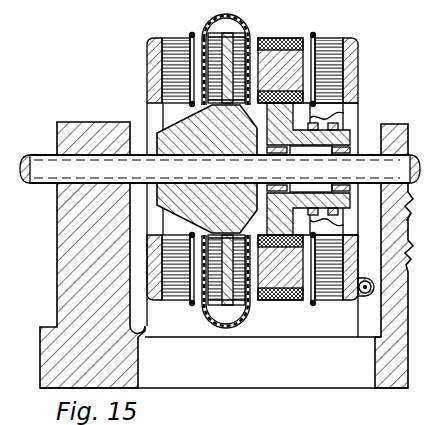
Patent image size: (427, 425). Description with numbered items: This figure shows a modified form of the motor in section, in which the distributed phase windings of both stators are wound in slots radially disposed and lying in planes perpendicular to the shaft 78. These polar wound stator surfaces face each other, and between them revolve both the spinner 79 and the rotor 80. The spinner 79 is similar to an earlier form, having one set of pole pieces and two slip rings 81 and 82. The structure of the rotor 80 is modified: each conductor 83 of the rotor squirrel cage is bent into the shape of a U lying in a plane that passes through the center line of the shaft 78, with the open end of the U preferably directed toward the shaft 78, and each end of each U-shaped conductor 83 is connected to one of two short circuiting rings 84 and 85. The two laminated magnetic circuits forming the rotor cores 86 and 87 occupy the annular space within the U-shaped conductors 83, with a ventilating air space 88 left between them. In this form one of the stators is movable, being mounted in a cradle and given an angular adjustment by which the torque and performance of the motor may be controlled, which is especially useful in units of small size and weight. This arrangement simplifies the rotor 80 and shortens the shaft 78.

The shaft 78 is at (45, 184).
The spinner 79 is at (303, 148).
The rotor 80 is at (225, 147).
The slip ring 81 is at (344, 113).
The slip ring 82 is at (334, 124).
The conductor 83 is at (241, 329).
The short circuiting ring 84 is at (192, 234).
The short circuiting ring 85 is at (244, 238).
The rotor core 86 is at (193, 34).
The rotor core 87 is at (240, 36).
The ventilating air space 88 is at (232, 48).